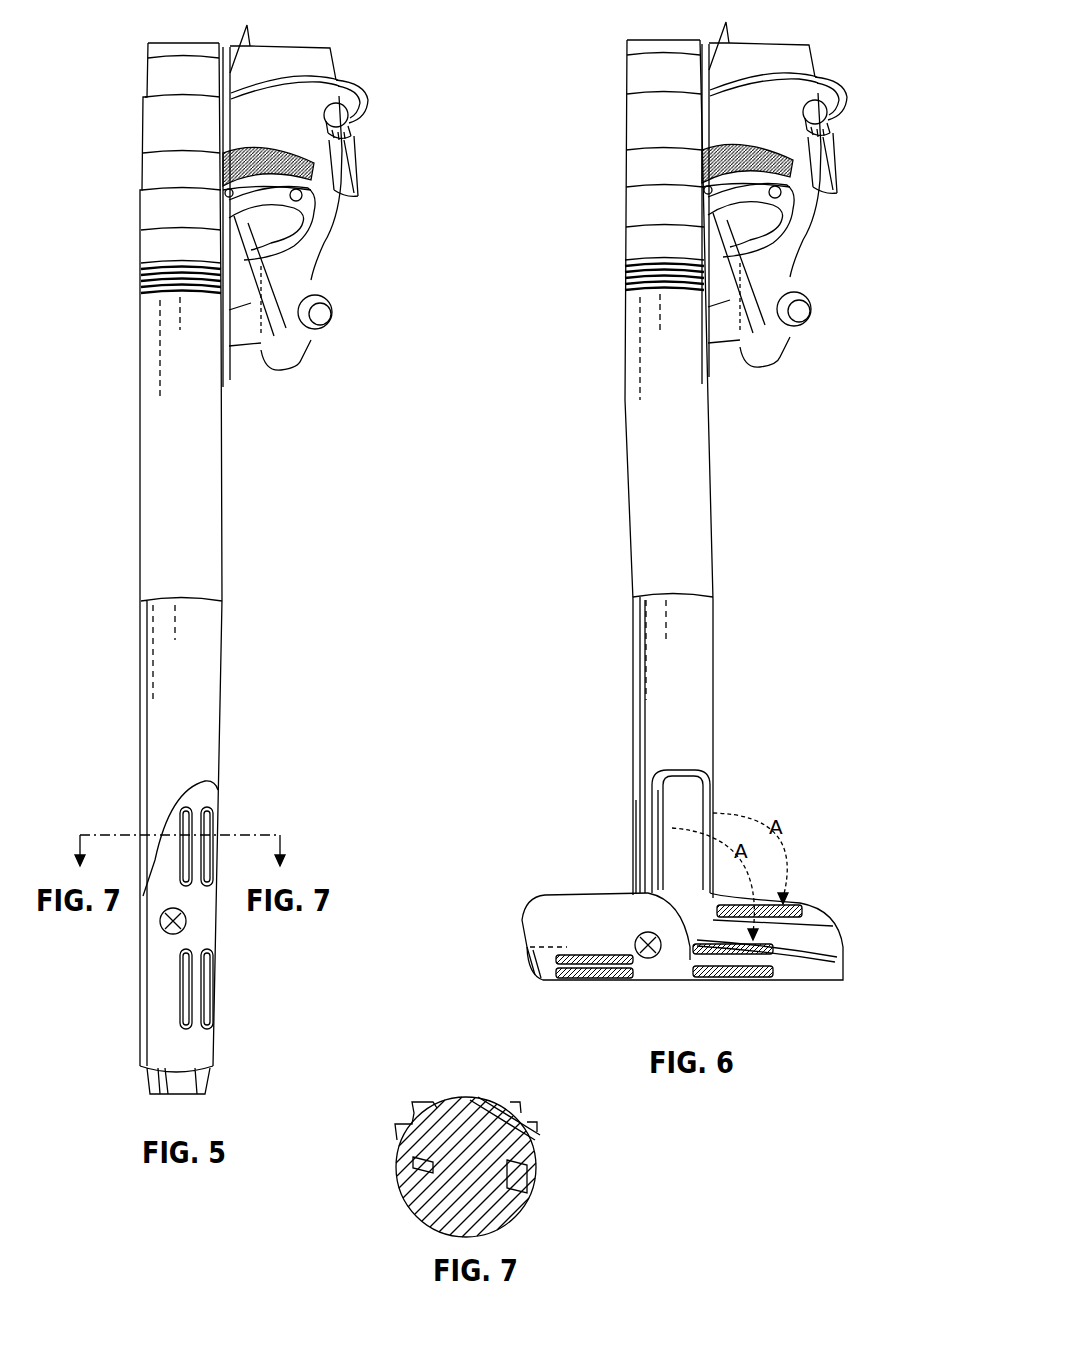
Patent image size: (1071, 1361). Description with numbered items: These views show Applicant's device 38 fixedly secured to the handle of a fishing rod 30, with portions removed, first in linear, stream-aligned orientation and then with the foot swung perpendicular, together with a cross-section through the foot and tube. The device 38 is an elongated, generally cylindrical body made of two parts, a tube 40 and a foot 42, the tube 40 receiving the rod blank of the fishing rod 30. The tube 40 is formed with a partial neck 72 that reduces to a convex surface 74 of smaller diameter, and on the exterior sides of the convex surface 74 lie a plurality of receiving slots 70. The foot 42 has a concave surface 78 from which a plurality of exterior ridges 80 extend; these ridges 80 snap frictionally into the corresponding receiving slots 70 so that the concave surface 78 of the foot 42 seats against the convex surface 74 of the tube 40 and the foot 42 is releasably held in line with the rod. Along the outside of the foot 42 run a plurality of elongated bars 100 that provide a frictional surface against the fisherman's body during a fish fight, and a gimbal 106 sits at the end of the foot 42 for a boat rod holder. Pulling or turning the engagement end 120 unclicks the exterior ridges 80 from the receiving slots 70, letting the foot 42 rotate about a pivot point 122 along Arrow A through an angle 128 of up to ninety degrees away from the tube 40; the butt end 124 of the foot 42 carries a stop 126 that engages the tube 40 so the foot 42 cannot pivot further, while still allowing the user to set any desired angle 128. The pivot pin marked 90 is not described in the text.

In FIG. 5, the fishing rod 30 is at (563, 425).
In FIG. 5, the device 38 is at (100, 767).
In FIG. 5, the tube 40 is at (175, 676).
In FIG. 6, the tube 40 is at (690, 623).
In FIG. 7, the tube 40 is at (387, 1183).
In FIG. 5, the foot 42 is at (161, 959).
In FIG. 6, the foot 42 is at (797, 976).
In FIG. 7, the foot 42 is at (472, 1102).
In FIG. 6, the plurality of receiving slots 70 is at (650, 800).
In FIG. 7, the plurality of receiving slots 70 is at (400, 1197).
In FIG. 6, the partial neck 72 is at (699, 773).
In FIG. 6, the convex surface 74 is at (690, 789).
In FIG. 6, the concave surface 78 is at (813, 941).
In FIG. 6, the plurality of exterior ridges 80 is at (789, 908).
In FIG. 7, the plurality of exterior ridges 80 is at (388, 1157).
In FIG. 6, the pivot pin 90 is at (664, 970).
In FIG. 5, the plurality of elongated bars 100 is at (213, 816).
In FIG. 6, the plurality of elongated bars 100 is at (582, 986).
In FIG. 5, the gimbal 106 is at (150, 1080).
In FIG. 6, the gimbal 106 is at (529, 970).
In FIG. 6, the engagement end 120 is at (848, 987).
In FIG. 6, the pivot point 122 is at (670, 962).
In FIG. 6, the butt end 124 is at (560, 913).
In FIG. 6, the stop 126 is at (621, 904).
In FIG. 6, the angle 128 is at (707, 813).